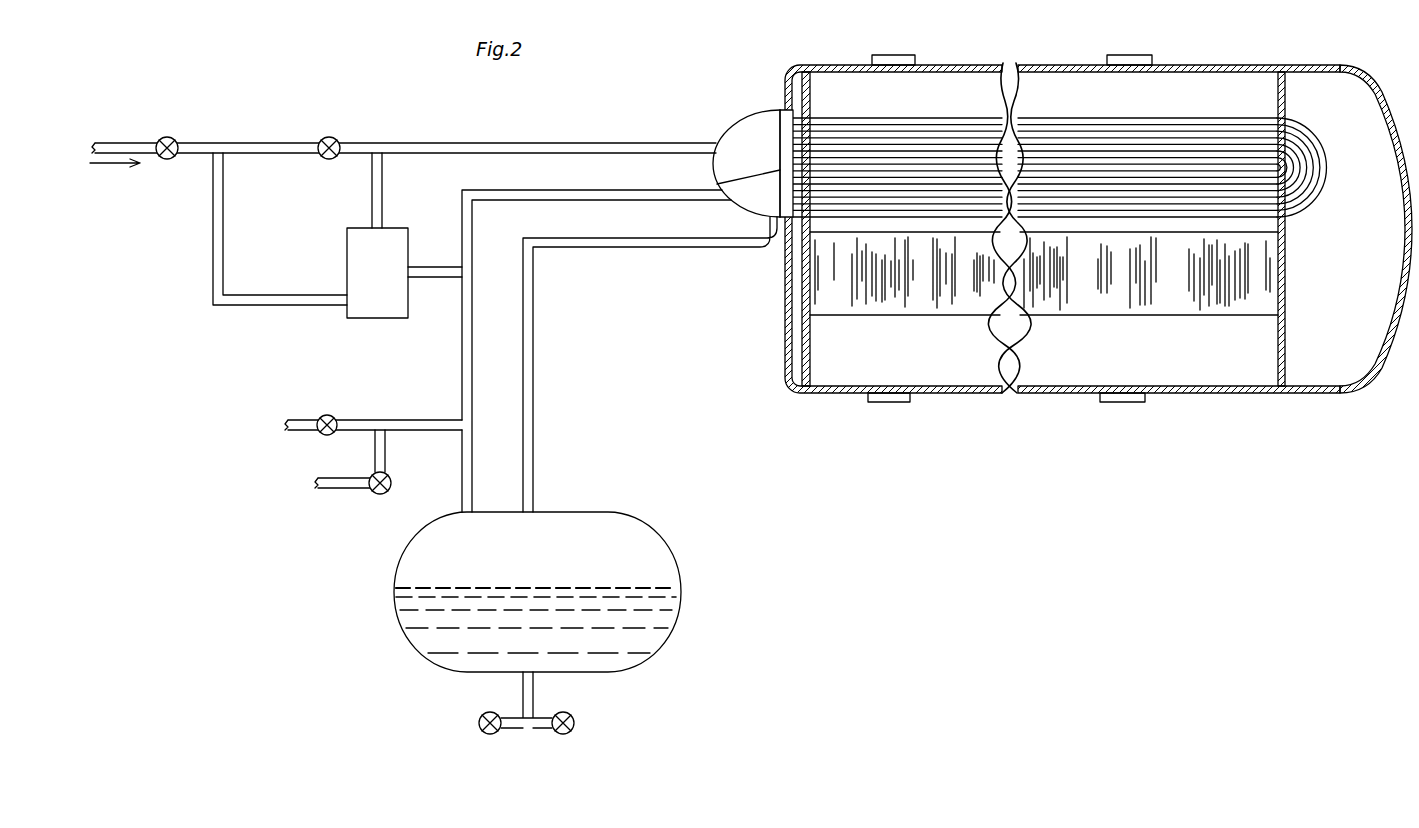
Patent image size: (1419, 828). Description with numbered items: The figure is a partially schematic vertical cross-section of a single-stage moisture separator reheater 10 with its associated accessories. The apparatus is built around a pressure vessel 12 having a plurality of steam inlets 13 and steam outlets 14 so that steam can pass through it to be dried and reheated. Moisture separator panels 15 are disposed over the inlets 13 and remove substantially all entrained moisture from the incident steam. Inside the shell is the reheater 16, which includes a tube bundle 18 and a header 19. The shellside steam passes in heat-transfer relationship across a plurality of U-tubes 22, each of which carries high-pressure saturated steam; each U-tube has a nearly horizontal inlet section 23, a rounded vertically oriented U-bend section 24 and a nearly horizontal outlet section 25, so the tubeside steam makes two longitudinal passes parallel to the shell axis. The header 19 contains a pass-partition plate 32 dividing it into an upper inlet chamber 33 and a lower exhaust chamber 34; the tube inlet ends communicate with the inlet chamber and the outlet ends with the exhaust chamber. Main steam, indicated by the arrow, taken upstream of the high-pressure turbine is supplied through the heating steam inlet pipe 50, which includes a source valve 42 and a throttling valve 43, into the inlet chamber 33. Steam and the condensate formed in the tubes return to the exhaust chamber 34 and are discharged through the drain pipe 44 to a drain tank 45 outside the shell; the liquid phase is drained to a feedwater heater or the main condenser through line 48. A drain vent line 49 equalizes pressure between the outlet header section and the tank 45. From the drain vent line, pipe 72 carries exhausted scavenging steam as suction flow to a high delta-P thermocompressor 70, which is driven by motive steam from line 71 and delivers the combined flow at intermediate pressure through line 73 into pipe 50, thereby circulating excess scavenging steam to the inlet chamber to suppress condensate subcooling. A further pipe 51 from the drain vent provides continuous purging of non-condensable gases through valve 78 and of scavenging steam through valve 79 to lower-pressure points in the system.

The moisture separator reheater 10 is at (1098, 219).
The pressure vessel 12 is at (1386, 358).
The steam inlets 13 is at (893, 402).
The steam outlets 14 is at (893, 55).
The moisture separator panels 15 is at (1044, 279).
The reheater 16 is at (1180, 166).
The tube bundle 18 is at (1067, 164).
The header 19 is at (782, 113).
The U-tubes 22 is at (1054, 150).
The inlet section 23 is at (897, 118).
The U-bend section 24 is at (1328, 204).
The outlet section 25 is at (1077, 218).
The pass-partition plate 32 is at (776, 170).
The inlet chamber 33 is at (738, 156).
The exhaust chamber 34 is at (762, 210).
The source valve 42 is at (173, 137).
The throttling valve 43 is at (334, 137).
The drain pipe 44 is at (690, 247).
The drain tank 45 is at (650, 500).
The line 48 is at (533, 679).
The drain vent line 49 is at (462, 404).
The heating steam inlet pipe 50 is at (403, 147).
The pipe 51 is at (449, 432).
The thermocompressor 70 is at (347, 270).
The line 71 is at (213, 236).
The pipe 72 is at (458, 280).
The line 73 is at (372, 178).
The valve 78 is at (376, 493).
The valve 79 is at (330, 413).